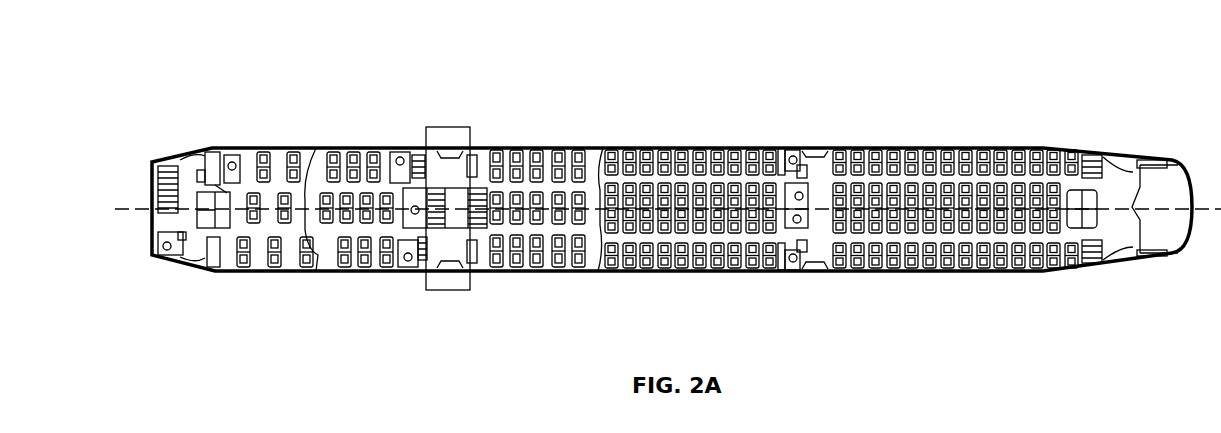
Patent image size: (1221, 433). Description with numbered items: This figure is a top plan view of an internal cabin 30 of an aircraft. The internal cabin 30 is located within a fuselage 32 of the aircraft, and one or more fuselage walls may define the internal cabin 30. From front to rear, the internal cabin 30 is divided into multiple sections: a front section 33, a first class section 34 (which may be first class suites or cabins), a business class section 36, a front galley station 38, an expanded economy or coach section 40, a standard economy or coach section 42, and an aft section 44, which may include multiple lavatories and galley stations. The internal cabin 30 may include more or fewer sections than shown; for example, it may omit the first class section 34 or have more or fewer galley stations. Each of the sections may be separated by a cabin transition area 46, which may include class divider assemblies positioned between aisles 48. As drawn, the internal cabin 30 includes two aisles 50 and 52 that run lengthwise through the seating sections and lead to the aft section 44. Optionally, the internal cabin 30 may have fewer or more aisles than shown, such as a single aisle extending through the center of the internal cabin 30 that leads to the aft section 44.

The internal cabin 30 is at (268, 66).
The fuselage 32 is at (552, 118).
The front section 33 is at (201, 284).
The first class section 34 is at (283, 272).
The business class section 36 is at (343, 150).
The front galley station 38 is at (447, 283).
The expanded economy or coach section 40 is at (532, 272).
The standard economy or coach section 42 is at (853, 211).
The aft section 44 is at (1125, 170).
The cabin transition area 46 is at (213, 150).
The aisles 48 is at (440, 180).
The aisle 50 is at (950, 180).
The aisle 52 is at (966, 238).